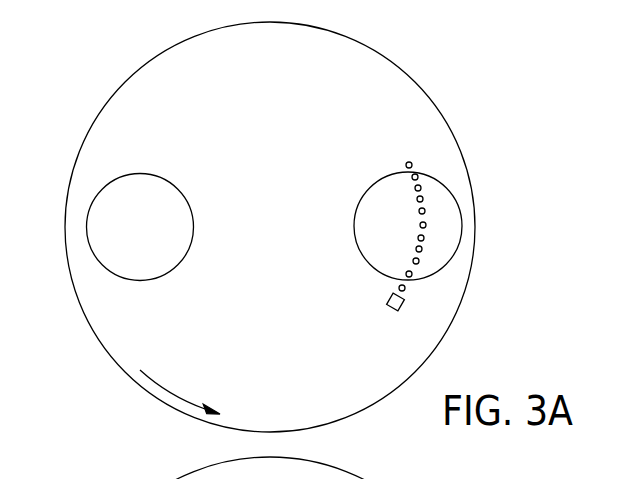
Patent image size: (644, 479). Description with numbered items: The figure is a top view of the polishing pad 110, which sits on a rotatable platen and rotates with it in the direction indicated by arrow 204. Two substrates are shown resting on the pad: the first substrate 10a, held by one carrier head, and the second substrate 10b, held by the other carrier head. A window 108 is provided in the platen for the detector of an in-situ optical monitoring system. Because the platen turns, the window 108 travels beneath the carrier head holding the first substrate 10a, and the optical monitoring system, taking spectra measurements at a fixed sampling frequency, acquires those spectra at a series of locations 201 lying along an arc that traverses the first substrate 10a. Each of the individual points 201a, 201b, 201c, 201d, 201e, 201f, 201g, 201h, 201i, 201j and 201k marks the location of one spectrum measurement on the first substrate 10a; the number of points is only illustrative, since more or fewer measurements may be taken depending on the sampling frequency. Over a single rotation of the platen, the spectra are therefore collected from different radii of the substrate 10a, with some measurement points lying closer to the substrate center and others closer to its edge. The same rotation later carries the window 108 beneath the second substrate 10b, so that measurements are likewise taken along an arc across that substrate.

The polishing pad 110 is at (288, 418).
The first substrate 10a is at (386, 303).
The second substrate 10b is at (193, 227).
The window 108 is at (405, 303).
The locations 201 is at (562, 65).
The point 201a is at (402, 288).
The point 201b is at (409, 274).
The point 201c is at (416, 261).
The point 201d is at (419, 249).
The point 201e is at (421, 238).
The point 201f is at (423, 225).
The point 201g is at (422, 211).
The point 201h is at (420, 199).
The point 201i is at (418, 188).
The point 201j is at (415, 177).
The point 201k is at (409, 165).
The arrow 204 is at (170, 393).